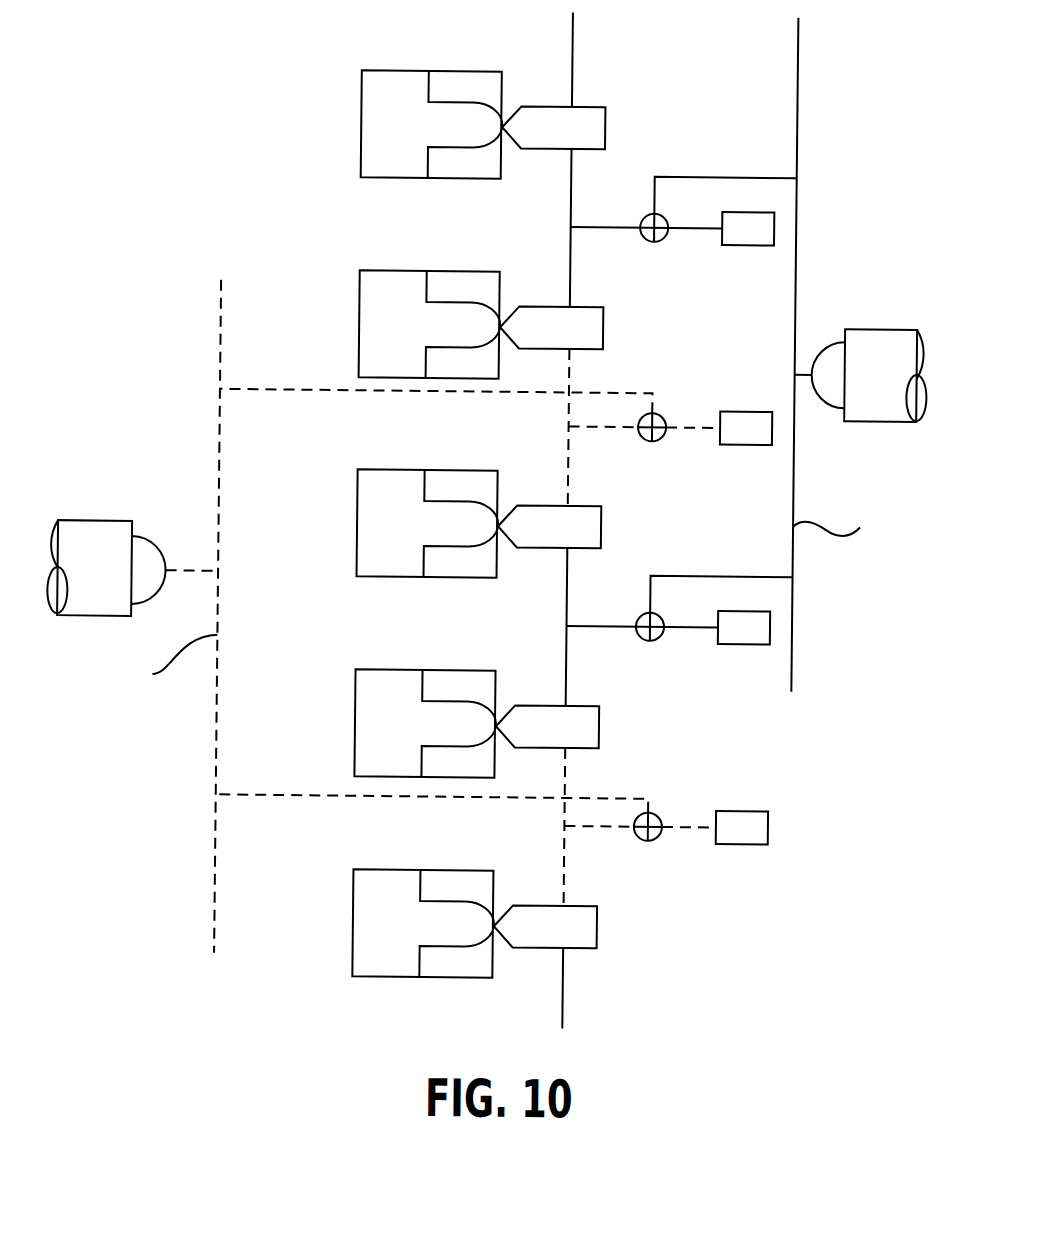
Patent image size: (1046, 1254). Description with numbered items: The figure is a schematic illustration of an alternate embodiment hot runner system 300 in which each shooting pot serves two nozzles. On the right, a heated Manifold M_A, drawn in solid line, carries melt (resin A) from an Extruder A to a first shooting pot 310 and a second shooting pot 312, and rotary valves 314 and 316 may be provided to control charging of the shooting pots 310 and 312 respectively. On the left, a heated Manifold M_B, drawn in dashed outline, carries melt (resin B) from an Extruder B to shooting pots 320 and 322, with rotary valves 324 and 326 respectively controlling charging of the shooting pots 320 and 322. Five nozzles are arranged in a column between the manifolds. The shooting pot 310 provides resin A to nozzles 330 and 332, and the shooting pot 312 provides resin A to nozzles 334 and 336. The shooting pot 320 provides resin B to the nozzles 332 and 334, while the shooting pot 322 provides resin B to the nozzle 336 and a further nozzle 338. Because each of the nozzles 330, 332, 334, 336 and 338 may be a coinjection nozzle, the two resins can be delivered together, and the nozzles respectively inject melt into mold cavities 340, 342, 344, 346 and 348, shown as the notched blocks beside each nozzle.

The hot runner system 300 is at (489, 527).
The shooting pot 310 is at (751, 246).
The shooting pot 312 is at (751, 645).
The rotary valve 314 is at (656, 240).
The rotary valve 316 is at (656, 640).
The shooting pot 320 is at (751, 446).
The shooting pot 322 is at (751, 845).
The rotary valve 324 is at (656, 440).
The rotary valve 326 is at (656, 840).
The nozzle 330 is at (591, 130).
The nozzle 332 is at (591, 330).
The nozzle 334 is at (591, 530).
The nozzle 336 is at (591, 730).
The nozzle 338 is at (591, 930).
The mold cavity 340 is at (472, 79).
The mold cavity 342 is at (472, 279).
The mold cavity 344 is at (472, 478).
The mold cavity 346 is at (472, 678).
The mold cavity 348 is at (472, 878).